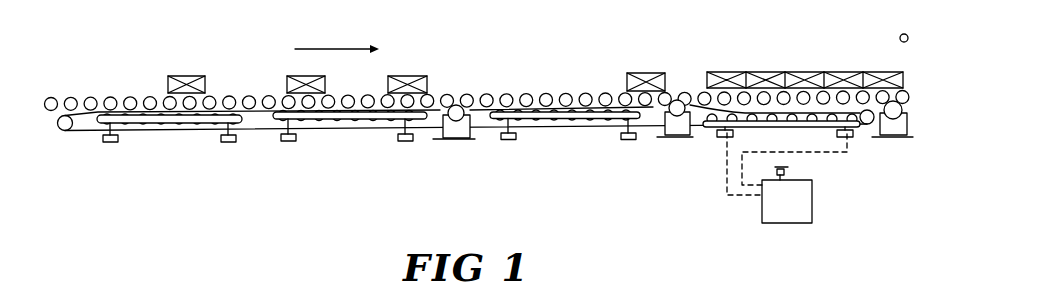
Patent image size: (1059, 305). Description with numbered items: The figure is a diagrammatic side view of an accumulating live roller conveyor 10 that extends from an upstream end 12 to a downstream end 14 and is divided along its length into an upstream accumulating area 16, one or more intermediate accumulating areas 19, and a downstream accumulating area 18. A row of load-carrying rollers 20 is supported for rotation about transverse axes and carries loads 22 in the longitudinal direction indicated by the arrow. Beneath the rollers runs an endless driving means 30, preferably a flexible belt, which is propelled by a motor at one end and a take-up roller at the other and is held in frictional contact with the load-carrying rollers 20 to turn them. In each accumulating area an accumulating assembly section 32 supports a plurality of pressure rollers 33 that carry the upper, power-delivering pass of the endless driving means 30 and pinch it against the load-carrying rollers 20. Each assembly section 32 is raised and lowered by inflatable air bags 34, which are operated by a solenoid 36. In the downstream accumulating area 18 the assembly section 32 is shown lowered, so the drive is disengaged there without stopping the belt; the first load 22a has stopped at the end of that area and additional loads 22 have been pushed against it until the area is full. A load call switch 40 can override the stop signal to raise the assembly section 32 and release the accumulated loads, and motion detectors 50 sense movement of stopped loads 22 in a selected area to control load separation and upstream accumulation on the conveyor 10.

The accumulating live roller conveyor 10 is at (587, 63).
The upstream end 12 is at (39, 126).
The downstream end 14 is at (916, 150).
The upstream accumulating area 16 is at (141, 160).
The downstream accumulating area 18 is at (744, 140).
The intermediate accumulating area 19 is at (336, 156).
The load-carrying rollers 20 is at (230, 96).
The loads 22 is at (410, 75).
The first load 22a is at (873, 72).
The endless driving means 30 is at (255, 110).
The accumulating assembly section 32 is at (190, 123).
The pressure rollers 33 is at (138, 110).
The inflatable air bags 34 is at (230, 142).
The solenoid 36 is at (900, 36).
The load call switch 40 is at (785, 169).
The motion detector 50 is at (451, 150).